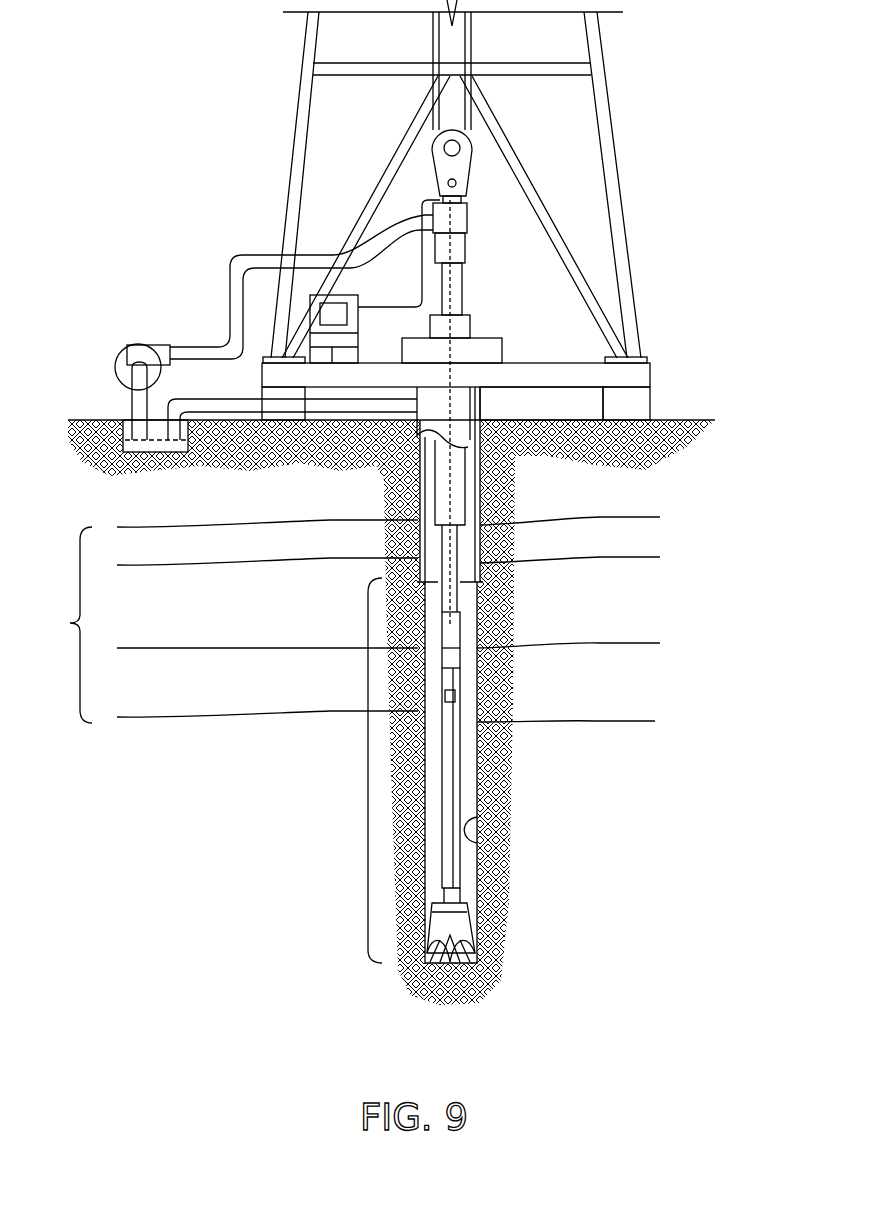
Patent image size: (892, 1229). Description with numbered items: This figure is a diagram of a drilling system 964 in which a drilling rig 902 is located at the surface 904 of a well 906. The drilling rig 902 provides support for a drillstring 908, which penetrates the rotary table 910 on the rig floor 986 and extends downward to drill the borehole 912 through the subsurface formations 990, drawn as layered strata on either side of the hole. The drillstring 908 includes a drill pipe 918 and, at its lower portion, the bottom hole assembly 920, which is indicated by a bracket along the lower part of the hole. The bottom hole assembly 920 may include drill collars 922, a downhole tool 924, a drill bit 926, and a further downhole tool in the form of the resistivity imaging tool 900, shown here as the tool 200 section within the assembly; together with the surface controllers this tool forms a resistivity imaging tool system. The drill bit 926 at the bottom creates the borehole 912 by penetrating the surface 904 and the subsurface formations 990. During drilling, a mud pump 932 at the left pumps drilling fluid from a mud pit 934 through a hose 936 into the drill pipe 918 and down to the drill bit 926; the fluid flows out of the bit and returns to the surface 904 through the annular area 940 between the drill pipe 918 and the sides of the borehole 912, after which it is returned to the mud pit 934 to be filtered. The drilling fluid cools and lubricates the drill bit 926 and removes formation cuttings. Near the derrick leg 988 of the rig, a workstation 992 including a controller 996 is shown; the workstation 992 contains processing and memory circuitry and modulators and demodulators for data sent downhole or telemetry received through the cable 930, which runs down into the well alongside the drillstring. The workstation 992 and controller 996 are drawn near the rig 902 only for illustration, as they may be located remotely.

The system 964 is at (185, 85).
The derrick mast leg 988 is at (605, 88).
The drilling rig 902 is at (625, 175).
The hose 936 is at (240, 255).
The workstation 992 is at (348, 290).
The mud pump 932 is at (143, 345).
The rotary table 910 is at (483, 338).
The controller 996 is at (348, 320).
The rig floor 986 is at (652, 368).
The well 906 is at (490, 416).
The surface 904 is at (670, 418).
The mud pit 934 is at (140, 452).
The drill collars 922 is at (467, 488).
The cable 930 is at (450, 522).
The drill pipe 918 is at (457, 562).
The annular area 940 is at (468, 600).
The downhole tool 200 is at (452, 640).
The resistivity imaging tool 900 is at (452, 658).
The drillstring 908 is at (465, 772).
The borehole 912 is at (470, 815).
The downhole tool 924 is at (450, 870).
The drill bit 926 is at (460, 925).
The bottom hole assembly 920 is at (362, 765).
The subsurface formations 990 is at (343, 620).